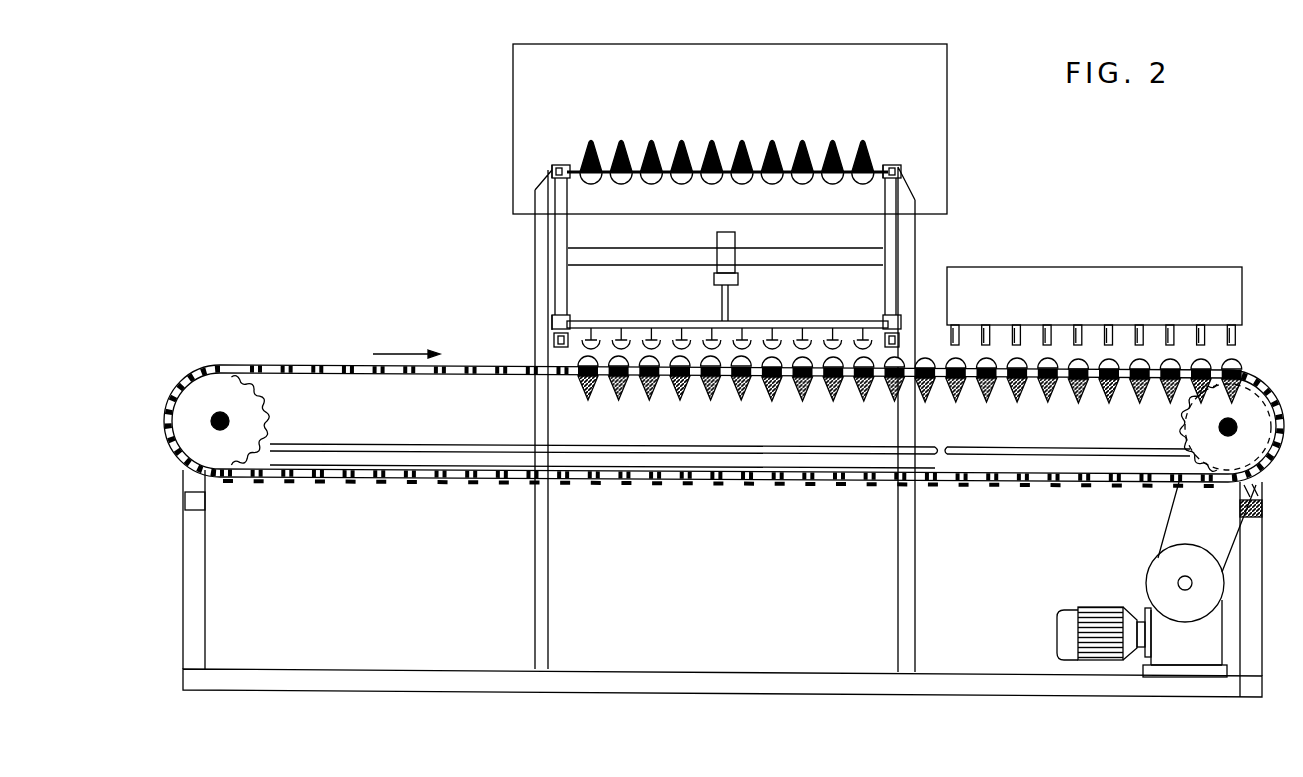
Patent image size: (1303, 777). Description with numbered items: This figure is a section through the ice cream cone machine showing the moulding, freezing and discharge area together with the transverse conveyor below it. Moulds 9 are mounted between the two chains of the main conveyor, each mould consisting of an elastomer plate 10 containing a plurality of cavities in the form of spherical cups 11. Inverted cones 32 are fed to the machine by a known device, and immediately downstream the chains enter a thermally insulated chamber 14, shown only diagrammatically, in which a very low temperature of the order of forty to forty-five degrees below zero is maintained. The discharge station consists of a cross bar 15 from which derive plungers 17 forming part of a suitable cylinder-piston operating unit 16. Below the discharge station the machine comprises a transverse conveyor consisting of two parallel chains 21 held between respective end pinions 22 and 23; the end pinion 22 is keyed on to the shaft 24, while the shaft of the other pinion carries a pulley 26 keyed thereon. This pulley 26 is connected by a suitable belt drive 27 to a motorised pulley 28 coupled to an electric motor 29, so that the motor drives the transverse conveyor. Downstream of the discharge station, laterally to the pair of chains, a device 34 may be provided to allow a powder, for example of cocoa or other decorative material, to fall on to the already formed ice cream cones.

The mould 9 is at (735, 168).
The elastomer plate 10 is at (882, 170).
The spherical cup 11 is at (680, 186).
The thermally insulated chamber 14 is at (527, 63).
The cross bar 15 is at (760, 323).
The cylinder-piston operating unit 16 is at (737, 252).
The plunger 17 is at (778, 340).
The chain 21 is at (332, 375).
The end pinion 22 is at (242, 375).
The end pinion 23 is at (1258, 410).
The shaft 24 is at (222, 428).
The pulley 26 is at (1183, 428).
The belt drive 27 is at (1168, 508).
The motorised pulley 28 is at (1163, 566).
The electric motor 29 is at (1098, 627).
The inverted cone 32 is at (673, 160).
The device 34 is at (1080, 311).